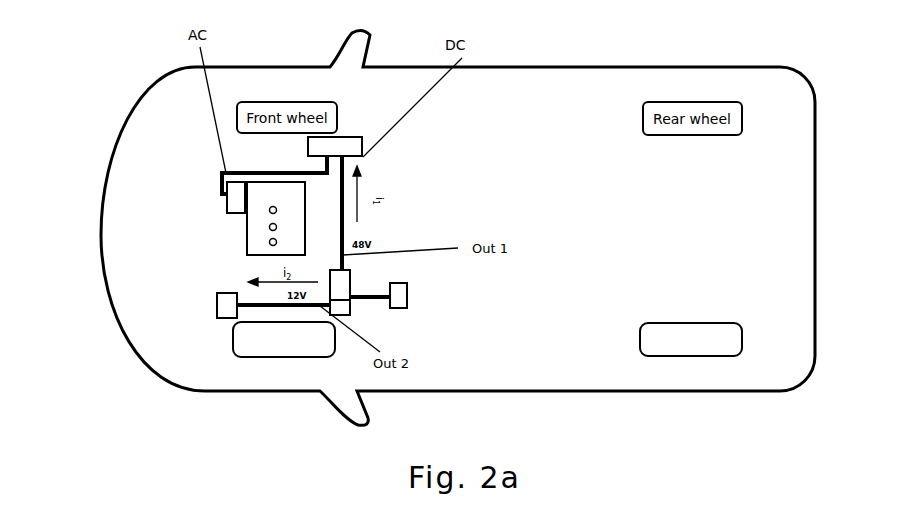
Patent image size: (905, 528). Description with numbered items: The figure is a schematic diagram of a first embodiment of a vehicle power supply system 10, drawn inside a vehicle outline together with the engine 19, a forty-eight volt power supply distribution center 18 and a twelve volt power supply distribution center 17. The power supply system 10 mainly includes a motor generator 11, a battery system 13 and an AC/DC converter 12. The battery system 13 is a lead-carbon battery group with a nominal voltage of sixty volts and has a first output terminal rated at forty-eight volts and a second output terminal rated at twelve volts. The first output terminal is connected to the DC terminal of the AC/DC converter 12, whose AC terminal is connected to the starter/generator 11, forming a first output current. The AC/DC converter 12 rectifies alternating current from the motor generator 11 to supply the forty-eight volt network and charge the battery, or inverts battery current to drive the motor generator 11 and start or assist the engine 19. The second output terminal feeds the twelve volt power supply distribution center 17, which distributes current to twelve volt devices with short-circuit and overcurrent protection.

The power supply system 10 is at (421, 222).
The motor generator 11 is at (228, 203).
The AC/DC converter 12 is at (344, 148).
The battery system 13 is at (350, 278).
The 12V power supply distribution center 17 is at (217, 318).
The 48V power supply distribution center 18 is at (407, 308).
The engine 19 is at (248, 238).